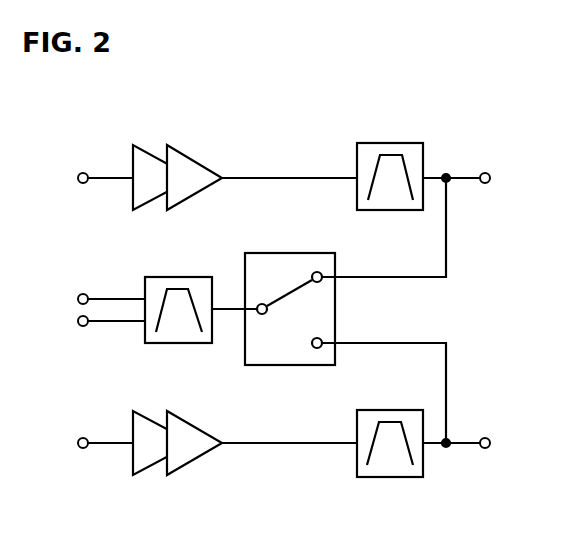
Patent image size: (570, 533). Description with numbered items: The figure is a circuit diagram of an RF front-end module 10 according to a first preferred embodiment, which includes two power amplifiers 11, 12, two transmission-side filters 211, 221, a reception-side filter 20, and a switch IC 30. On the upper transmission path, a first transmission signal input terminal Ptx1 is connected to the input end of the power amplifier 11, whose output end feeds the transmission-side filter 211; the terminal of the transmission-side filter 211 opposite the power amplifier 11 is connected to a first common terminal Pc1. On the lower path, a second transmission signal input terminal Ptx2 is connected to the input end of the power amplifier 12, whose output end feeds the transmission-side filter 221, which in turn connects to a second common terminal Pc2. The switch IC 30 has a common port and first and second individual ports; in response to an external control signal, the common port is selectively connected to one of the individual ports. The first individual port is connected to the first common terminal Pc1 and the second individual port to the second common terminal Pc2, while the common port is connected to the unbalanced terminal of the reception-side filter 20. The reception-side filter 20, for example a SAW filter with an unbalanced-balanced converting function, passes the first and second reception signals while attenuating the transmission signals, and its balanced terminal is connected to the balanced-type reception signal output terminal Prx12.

The RF front-end module 10 is at (436, 96).
The power amplifier 11 is at (199, 159).
The power amplifier 12 is at (205, 427).
The reception-side filter 20 is at (198, 277).
The switch IC 30 is at (330, 249).
The transmission-side filter 211 is at (418, 137).
The transmission-side filter 221 is at (405, 477).
The first transmission signal input terminal Ptx1 is at (66, 168).
The second transmission signal input terminal Ptx2 is at (64, 434).
The balanced-type reception signal output terminal Prx12 is at (58, 303).
The first common terminal Pc1 is at (500, 167).
The second common terminal Pc2 is at (501, 430).